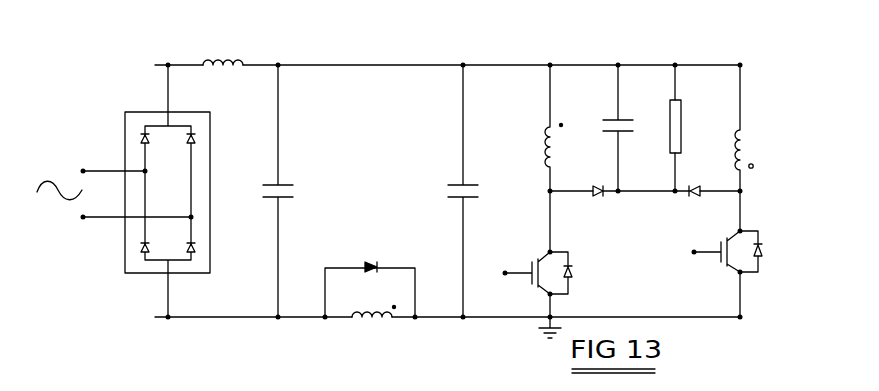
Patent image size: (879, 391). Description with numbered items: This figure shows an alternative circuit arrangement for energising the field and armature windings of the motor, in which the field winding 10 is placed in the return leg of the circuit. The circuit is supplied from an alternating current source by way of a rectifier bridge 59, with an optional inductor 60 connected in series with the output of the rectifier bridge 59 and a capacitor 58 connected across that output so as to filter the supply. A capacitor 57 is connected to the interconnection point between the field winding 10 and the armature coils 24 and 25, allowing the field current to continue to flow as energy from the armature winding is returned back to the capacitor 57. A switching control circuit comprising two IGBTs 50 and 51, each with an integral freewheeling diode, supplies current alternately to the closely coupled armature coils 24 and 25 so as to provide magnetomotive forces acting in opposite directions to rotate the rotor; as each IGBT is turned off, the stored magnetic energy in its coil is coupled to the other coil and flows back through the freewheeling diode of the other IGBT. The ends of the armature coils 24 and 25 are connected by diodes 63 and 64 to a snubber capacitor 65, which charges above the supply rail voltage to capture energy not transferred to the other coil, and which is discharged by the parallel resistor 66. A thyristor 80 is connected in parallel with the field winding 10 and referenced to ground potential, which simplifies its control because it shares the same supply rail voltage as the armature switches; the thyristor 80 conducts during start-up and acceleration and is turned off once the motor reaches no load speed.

The rectifier bridge 59 is at (125, 147).
The inductor 60 is at (208, 63).
The capacitor 58 is at (293, 185).
The capacitor 57 is at (448, 185).
The thyristor 80 is at (370, 265).
The field winding 10 is at (368, 320).
The armature coil 24 is at (548, 155).
The snubber capacitor 65 is at (603, 120).
The resistor 66 is at (683, 126).
The armature coil 25 is at (742, 135).
The diode 63 is at (601, 197).
The diode 64 is at (693, 195).
The IGBT 50 is at (530, 267).
The IGBT 51 is at (720, 258).